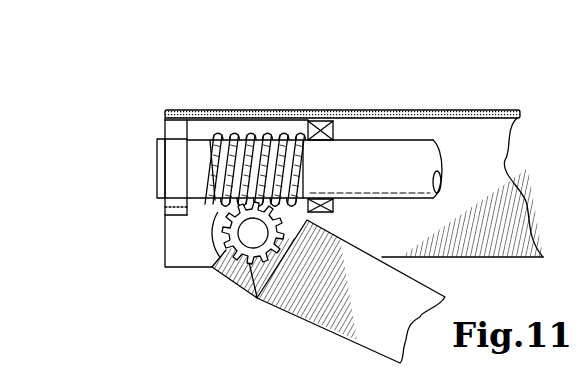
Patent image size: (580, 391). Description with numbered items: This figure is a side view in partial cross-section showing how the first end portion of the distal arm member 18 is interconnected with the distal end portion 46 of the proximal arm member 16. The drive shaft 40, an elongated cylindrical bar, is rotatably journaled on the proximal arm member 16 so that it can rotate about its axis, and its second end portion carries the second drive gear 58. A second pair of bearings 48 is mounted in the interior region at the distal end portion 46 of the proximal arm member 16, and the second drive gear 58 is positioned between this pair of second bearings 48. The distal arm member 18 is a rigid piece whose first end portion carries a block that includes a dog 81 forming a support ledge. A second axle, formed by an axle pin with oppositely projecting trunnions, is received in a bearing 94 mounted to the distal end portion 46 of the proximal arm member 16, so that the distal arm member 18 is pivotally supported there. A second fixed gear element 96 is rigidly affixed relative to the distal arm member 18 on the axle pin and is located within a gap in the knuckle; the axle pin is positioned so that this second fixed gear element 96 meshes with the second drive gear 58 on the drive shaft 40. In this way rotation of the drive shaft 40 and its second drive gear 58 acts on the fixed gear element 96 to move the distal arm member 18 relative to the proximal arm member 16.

The proximal arm member 16 is at (417, 110).
The distal arm member 18 is at (340, 338).
The drive shaft 40 is at (338, 183).
The distal end portion 46 is at (214, 104).
The second bearings 48 is at (178, 151).
The second drive gear 58 is at (248, 150).
The dog 81 is at (253, 296).
The bearing 94 is at (220, 230).
The second fixed gear element 96 is at (240, 285).